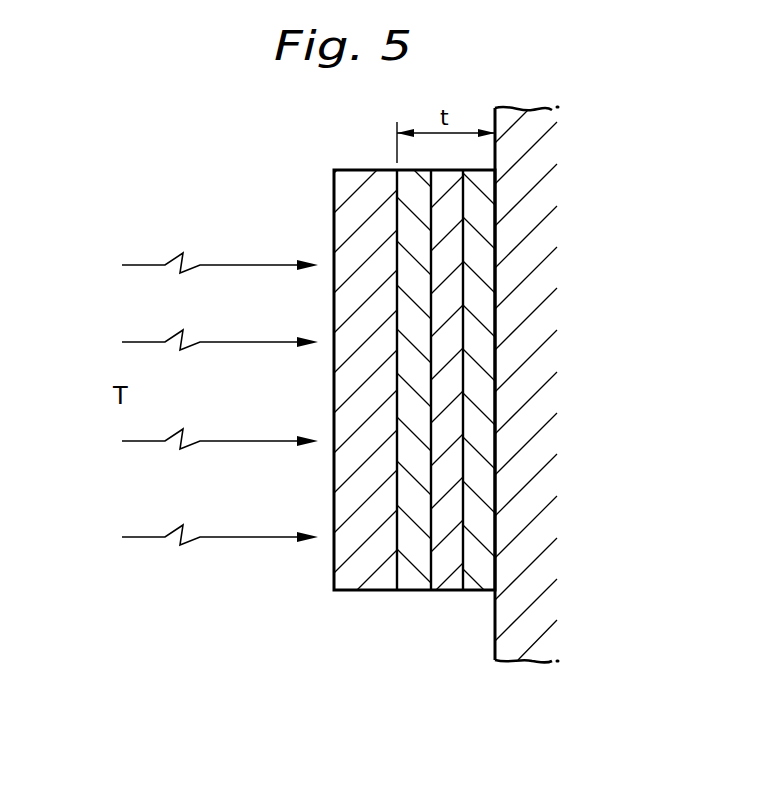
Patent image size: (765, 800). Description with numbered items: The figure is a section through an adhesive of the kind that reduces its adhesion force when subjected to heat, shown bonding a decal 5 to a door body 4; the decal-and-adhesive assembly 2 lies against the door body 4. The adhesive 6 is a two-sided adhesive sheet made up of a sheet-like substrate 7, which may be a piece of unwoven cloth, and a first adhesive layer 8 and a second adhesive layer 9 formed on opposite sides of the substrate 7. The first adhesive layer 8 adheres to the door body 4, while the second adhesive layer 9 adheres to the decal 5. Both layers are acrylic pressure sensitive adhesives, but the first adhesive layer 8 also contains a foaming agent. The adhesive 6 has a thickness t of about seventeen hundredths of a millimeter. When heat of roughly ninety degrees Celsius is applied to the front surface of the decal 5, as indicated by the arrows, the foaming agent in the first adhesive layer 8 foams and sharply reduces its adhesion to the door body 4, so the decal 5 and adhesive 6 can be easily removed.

The optical element / layered body 2 is at (333, 210).
The door body 4 is at (524, 662).
The decal 5 is at (352, 587).
The adhesive 6 is at (473, 683).
The substrate 7 is at (447, 592).
The first adhesive layer 8 is at (483, 592).
The second adhesive layer 9 is at (410, 592).